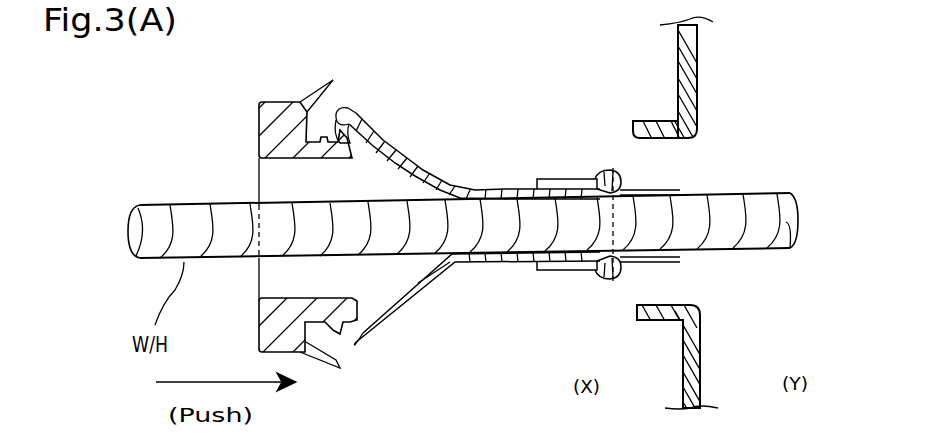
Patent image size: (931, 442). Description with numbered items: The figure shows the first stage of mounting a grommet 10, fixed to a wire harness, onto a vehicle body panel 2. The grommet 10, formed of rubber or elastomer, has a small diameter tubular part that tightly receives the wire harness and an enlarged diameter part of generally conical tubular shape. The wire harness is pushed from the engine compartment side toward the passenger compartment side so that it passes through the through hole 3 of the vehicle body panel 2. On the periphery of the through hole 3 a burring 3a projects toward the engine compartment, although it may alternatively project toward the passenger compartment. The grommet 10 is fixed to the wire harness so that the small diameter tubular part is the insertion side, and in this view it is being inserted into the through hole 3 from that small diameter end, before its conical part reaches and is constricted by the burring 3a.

The grommet 10 is at (405, 115).
The vehicle body panel 2 is at (697, 68).
The through hole 3 is at (688, 140).
The burring 3a is at (640, 117).